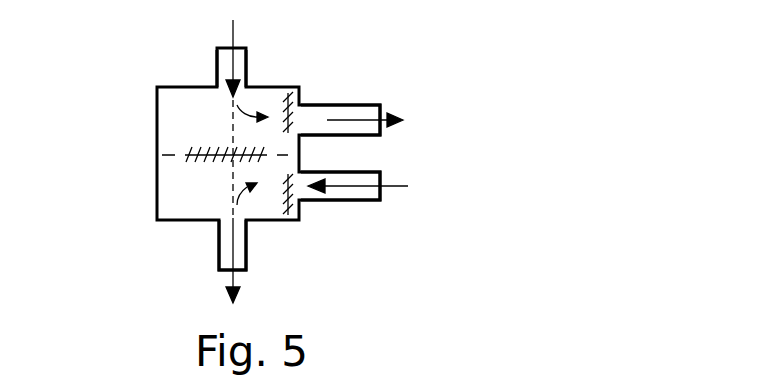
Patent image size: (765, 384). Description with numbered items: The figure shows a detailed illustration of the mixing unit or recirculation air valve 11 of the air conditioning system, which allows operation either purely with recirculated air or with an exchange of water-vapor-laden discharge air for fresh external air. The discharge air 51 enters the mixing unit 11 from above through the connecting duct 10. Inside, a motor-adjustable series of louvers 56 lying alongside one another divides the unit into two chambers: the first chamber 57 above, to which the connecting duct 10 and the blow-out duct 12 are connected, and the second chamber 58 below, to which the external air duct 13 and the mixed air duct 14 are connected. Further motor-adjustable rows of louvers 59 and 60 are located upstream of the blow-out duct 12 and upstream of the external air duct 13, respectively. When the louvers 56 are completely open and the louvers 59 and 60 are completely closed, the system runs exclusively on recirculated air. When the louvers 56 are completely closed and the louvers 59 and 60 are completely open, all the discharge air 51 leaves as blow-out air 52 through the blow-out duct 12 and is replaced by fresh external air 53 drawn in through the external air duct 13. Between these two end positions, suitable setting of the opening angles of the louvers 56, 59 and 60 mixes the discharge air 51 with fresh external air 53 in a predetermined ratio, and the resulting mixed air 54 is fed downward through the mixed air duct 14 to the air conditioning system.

The connecting duct 10 is at (246, 72).
The mixing unit 11 is at (193, 87).
The blow-out duct 12 is at (362, 105).
The external air duct 13 is at (337, 200).
The mixed air duct 14 is at (247, 250).
The discharge air 51 is at (236, 38).
The blow-out air 52 is at (366, 120).
The external air 53 is at (395, 187).
The mixed air 54 is at (232, 235).
The louvers 56 is at (178, 155).
The first chamber 57 is at (177, 123).
The second chamber 58 is at (175, 192).
The louvers 59 is at (292, 104).
The louvers 60 is at (293, 216).